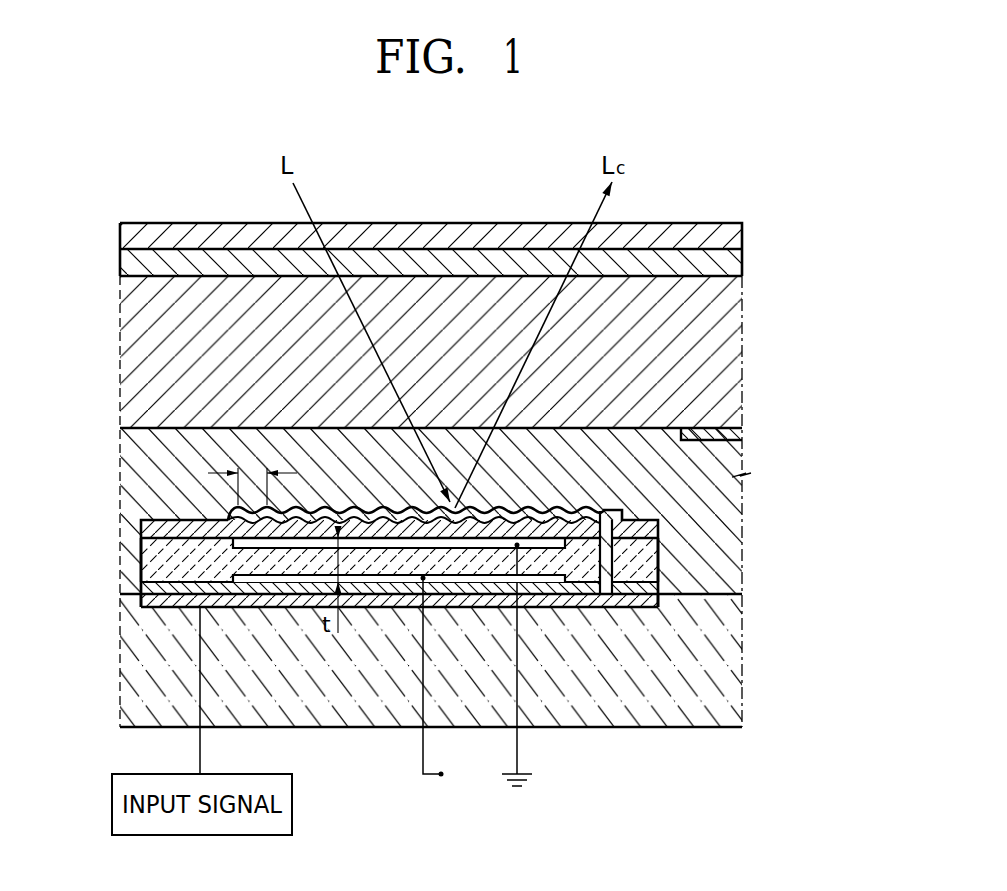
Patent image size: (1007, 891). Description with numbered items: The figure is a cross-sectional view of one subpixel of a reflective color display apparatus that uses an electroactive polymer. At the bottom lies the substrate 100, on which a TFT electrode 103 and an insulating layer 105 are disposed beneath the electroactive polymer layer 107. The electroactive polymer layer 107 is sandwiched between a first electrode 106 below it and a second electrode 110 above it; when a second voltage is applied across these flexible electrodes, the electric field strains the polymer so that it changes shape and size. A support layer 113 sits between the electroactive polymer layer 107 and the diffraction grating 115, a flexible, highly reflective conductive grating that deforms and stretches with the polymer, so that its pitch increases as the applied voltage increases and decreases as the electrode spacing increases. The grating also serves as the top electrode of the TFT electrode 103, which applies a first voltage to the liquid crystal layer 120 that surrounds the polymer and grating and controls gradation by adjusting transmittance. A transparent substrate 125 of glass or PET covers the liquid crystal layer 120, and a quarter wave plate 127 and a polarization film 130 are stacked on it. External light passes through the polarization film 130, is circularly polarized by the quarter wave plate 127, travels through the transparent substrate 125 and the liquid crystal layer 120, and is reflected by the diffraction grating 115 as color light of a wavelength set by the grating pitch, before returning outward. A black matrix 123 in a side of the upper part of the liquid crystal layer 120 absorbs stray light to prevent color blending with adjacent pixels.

The substrate 100 is at (732, 676).
The TFT electrode 103 is at (142, 604).
The insulating layer 105 is at (147, 588).
The first electrode 106 is at (233, 575).
The electroactive polymer layer 107 is at (147, 558).
The second electrode 110 is at (233, 539).
The support layer 113 is at (148, 519).
The diffraction grating 115 is at (231, 512).
The liquid crystal layer 120 is at (732, 527).
The black matrix 123 is at (743, 440).
The transparent substrate 125 is at (732, 352).
The quarter wave plate 127 is at (732, 261).
The polarization film 130 is at (732, 235).